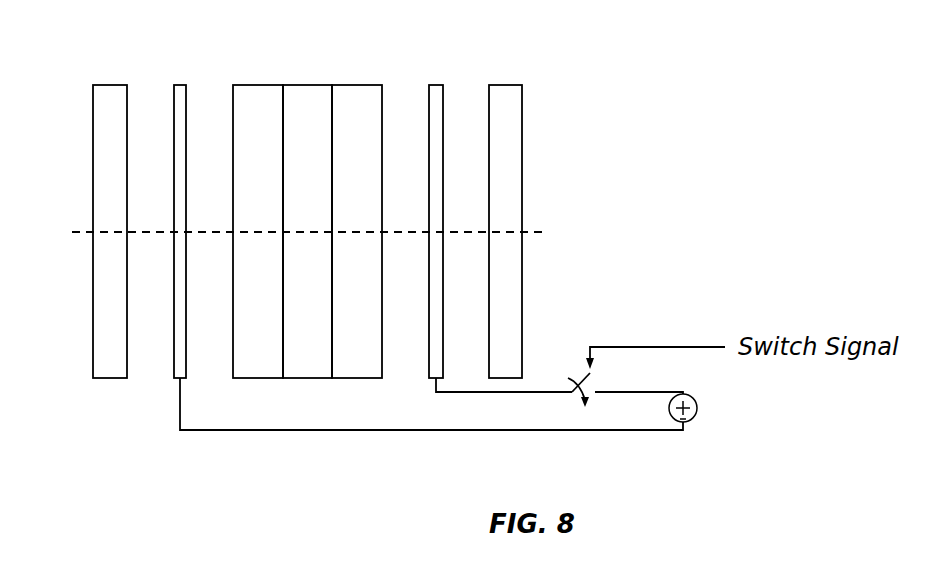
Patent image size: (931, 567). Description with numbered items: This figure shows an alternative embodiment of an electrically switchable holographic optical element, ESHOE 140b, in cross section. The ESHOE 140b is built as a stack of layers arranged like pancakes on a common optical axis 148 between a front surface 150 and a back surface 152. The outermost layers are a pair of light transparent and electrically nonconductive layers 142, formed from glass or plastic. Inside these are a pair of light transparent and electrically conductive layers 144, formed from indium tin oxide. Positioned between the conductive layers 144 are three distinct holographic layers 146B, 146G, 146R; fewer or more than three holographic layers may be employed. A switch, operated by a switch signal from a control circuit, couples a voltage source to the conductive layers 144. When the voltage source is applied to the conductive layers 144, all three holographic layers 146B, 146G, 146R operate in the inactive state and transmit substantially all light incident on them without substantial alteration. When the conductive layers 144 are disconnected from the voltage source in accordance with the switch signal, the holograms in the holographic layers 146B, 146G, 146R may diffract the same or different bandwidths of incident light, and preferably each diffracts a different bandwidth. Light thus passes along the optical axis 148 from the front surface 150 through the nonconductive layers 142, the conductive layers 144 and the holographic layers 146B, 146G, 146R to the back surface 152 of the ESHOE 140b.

The ESHOE 140b is at (614, 114).
The light transparent and electrically nonconductive layers 142 is at (332, 218).
The light transparent and electrically conductive layers 144 is at (337, 218).
The holographic layer 146B is at (289, 204).
The holographic layer 146G is at (325, 218).
The holographic layer 146R is at (386, 218).
The common optical axis 148 is at (343, 217).
The front surface 150 is at (61, 158).
The back surface 152 is at (558, 155).